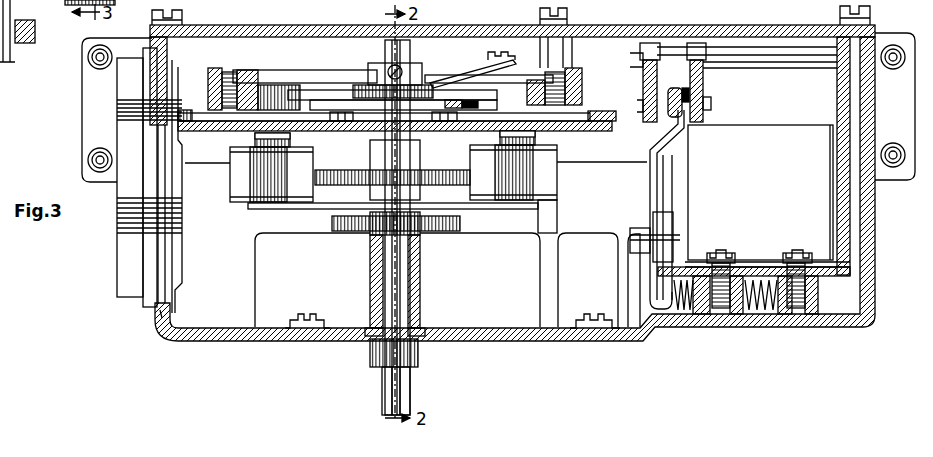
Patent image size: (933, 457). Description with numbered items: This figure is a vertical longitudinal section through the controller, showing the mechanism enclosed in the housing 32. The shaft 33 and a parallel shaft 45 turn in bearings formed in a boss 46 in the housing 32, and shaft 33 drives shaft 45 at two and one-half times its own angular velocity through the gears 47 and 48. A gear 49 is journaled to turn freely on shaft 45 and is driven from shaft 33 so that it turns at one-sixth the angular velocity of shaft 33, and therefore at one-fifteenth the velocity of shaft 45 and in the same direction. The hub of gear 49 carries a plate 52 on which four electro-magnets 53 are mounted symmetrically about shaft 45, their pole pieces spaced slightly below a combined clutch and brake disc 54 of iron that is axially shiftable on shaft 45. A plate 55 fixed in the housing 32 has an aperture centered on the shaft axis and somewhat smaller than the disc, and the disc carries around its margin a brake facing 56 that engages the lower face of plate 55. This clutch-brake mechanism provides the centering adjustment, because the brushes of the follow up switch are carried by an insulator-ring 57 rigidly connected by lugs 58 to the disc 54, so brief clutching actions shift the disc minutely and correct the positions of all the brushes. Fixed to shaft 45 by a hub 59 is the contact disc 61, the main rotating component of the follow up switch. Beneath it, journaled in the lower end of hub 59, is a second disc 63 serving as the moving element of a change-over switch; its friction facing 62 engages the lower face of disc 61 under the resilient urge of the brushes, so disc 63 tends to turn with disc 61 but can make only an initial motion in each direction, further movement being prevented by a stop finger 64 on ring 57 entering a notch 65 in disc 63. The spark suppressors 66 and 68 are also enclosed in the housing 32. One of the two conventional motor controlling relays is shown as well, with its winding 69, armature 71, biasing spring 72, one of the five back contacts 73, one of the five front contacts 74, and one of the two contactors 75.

The housing 32 is at (156, 326).
The shaft 33 is at (405, 380).
The parallel shaft 45 is at (400, 298).
The boss 46 is at (420, 257).
The gear 47 is at (332, 228).
The gear 48 is at (369, 228).
The gear 49 is at (336, 170).
The plate 52 is at (269, 209).
The electro-magnets 53 is at (236, 178).
The combined clutch and brake disc 54 is at (588, 131).
The plate 55 is at (600, 111).
The brake facing 56 is at (612, 124).
The insulator-ring 57 is at (208, 78).
The lugs 58 is at (343, 122).
The hub 59 is at (410, 64).
The contact disc 61 is at (318, 84).
The friction facing 62 is at (430, 109).
The second disc 63 is at (340, 98).
The stop finger 64 is at (513, 95).
The notch 65 is at (468, 109).
The spark suppressor 66 is at (587, 242).
The spark suppressor 68 is at (258, 272).
The winding 69 is at (783, 134).
The armature 71 is at (663, 178).
The biasing spring 72 is at (752, 261).
The back contact 73 is at (669, 100).
The front contact 74 is at (712, 107).
The contactor 75 is at (689, 95).